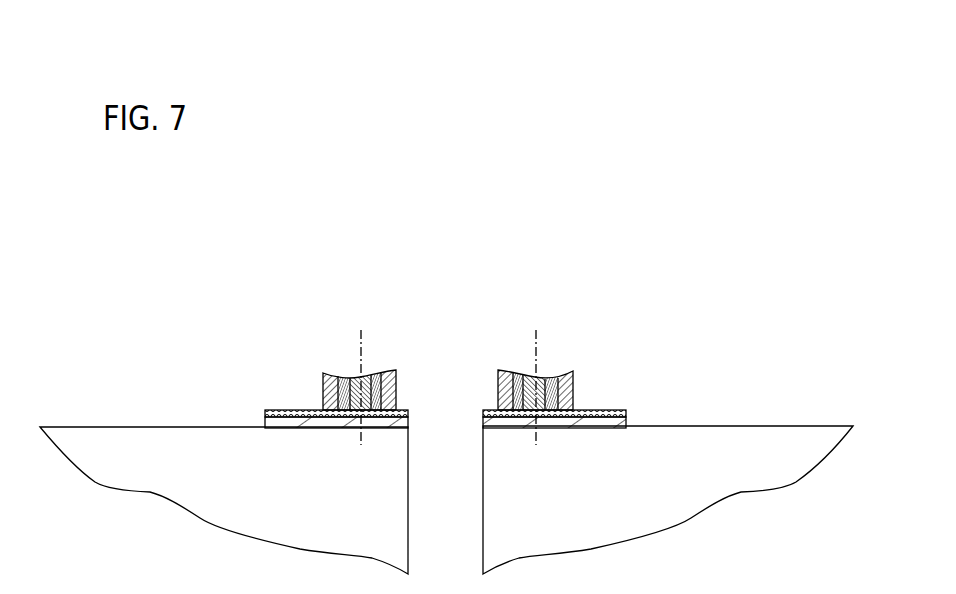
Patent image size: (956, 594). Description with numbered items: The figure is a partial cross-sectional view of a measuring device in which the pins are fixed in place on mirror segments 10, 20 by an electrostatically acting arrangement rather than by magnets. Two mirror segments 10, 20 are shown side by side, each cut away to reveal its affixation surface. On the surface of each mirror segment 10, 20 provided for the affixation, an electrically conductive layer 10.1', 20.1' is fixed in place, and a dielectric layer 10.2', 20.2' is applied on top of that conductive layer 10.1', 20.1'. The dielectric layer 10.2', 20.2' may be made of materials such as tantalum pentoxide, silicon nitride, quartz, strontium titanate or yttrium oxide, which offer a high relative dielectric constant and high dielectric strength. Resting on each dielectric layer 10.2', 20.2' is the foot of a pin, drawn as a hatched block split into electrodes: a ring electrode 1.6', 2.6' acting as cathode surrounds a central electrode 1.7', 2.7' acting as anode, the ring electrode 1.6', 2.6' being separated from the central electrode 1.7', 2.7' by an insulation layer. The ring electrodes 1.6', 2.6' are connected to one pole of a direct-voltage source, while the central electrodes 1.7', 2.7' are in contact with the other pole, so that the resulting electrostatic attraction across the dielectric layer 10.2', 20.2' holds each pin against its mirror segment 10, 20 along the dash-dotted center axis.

The mirror segment 10 is at (377, 500).
The mirror segment 20 is at (529, 500).
The electrically conductive layer 10.1' is at (287, 409).
The dielectric layer 10.2' is at (287, 388).
The electrically conductive layer 20.1' is at (602, 409).
The dielectric layer 20.2' is at (602, 384).
The ring electrode 1.6' is at (345, 361).
The central electrode 1.7' is at (391, 361).
The ring electrode 2.6' is at (563, 360).
The central electrode 2.7' is at (565, 360).